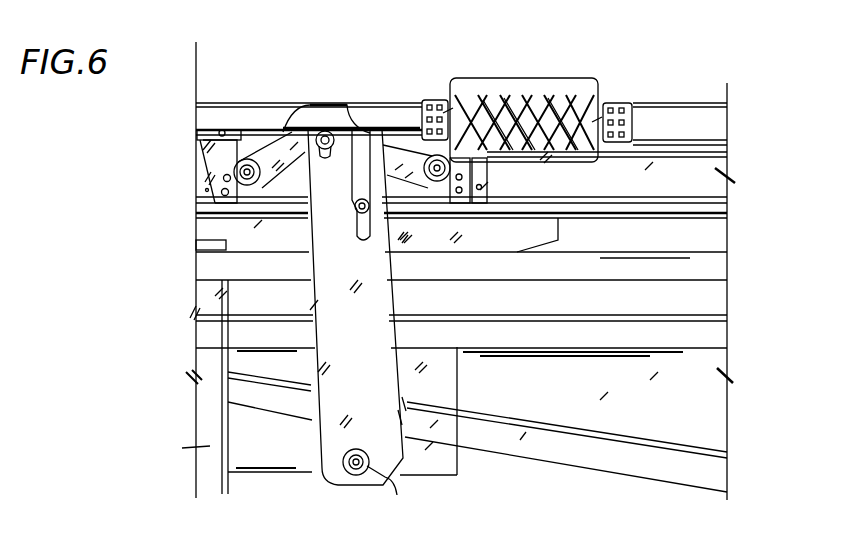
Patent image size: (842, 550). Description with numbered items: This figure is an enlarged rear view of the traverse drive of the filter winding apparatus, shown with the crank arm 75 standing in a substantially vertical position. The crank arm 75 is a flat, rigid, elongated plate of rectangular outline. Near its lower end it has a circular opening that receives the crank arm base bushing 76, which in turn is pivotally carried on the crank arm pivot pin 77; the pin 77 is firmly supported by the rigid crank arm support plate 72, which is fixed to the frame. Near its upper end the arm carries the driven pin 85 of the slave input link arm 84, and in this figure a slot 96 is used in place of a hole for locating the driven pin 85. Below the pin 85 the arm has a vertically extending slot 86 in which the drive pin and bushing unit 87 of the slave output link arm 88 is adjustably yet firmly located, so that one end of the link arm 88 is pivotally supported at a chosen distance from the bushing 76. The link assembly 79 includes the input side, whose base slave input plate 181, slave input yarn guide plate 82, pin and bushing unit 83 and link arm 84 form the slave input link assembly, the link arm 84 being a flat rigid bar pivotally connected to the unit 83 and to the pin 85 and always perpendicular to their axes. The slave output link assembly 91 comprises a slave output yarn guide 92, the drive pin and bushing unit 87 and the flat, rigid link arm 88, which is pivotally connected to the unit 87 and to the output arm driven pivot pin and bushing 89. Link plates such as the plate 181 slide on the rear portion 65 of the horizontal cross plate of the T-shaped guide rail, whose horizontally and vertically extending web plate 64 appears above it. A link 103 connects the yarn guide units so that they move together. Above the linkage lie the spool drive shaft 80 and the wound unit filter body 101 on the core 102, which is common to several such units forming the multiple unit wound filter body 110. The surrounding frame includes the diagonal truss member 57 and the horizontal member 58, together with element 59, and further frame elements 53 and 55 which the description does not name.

The frame member 53 is at (693, 400).
The frame side member 55 is at (442, 270).
The diagonal truss member 57 is at (673, 470).
The horizontal member 58 is at (708, 334).
The element 59 is at (710, 264).
The web plate 64 is at (707, 165).
The rear portion of horizontal cross plate 65 is at (713, 214).
The crank arm support plate 72 is at (440, 468).
The crank arm 75 is at (330, 467).
The crank arm base bushing 76 is at (356, 475).
The crank arm pivot pin 77 is at (383, 495).
The link assembly 79 is at (367, 66).
The spool drive shaft 80 is at (150, 195).
The slave input yarn guide plate 82 is at (210, 172).
The slave input link pin and bushing unit 83 is at (247, 158).
The slave input link arm 84 is at (286, 155).
The driven pin 85 is at (334, 120).
The slot 86 is at (362, 172).
The drive pin bushing unit 87 is at (357, 212).
The slave output link arm 88 is at (420, 177).
The output arm driven pivot pin and bushing 89 is at (440, 117).
The slave output link assembly 91 is at (489, 178).
The slave output yarn guide 92 is at (460, 165).
The slot 96 is at (329, 133).
The unit filter body 101 is at (577, 90).
The core 102 is at (623, 112).
The link 103 is at (718, 199).
The multiple unit wound filter body 110 is at (700, 80).
The base slave input plate 181 is at (207, 167).